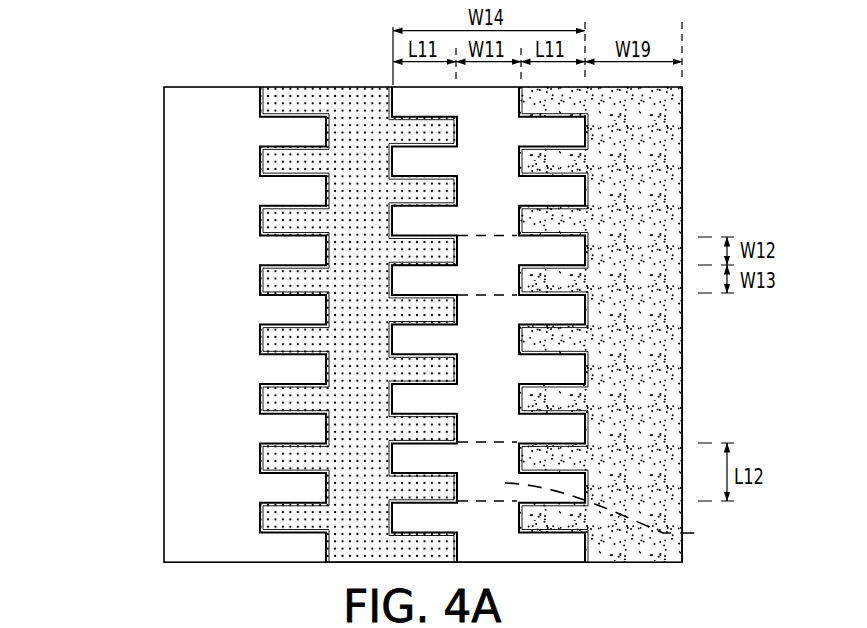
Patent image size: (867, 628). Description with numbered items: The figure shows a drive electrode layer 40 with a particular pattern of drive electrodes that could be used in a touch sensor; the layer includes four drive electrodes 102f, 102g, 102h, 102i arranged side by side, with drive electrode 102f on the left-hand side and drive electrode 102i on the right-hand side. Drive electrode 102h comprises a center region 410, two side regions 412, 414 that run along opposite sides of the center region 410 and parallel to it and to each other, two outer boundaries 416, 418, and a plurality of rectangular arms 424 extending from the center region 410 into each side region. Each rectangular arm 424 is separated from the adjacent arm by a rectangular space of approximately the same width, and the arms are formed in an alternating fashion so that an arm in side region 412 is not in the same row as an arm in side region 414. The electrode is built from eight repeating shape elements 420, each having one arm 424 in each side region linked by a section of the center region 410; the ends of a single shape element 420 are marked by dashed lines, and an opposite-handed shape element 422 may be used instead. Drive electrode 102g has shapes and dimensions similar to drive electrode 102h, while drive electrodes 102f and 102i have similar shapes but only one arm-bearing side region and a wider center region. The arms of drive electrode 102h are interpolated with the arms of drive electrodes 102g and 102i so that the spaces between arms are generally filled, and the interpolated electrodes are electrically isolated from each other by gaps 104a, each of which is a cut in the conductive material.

The drive electrode layer 40 is at (131, 99).
The drive electrode 102f is at (183, 102).
The drive electrode 102g is at (293, 92).
The drive electrode 102h is at (436, 117).
The drive electrode 102i is at (665, 125).
The gap 104a is at (323, 562).
The center region 410 is at (487, 142).
The side region 412 is at (420, 153).
The side region 414 is at (557, 130).
The outer boundary 416 is at (388, 162).
The outer boundary 418 is at (587, 142).
The repeating shape element 420 is at (634, 513).
The shape element 422 is at (505, 280).
The rectangular arm 424 is at (573, 250).